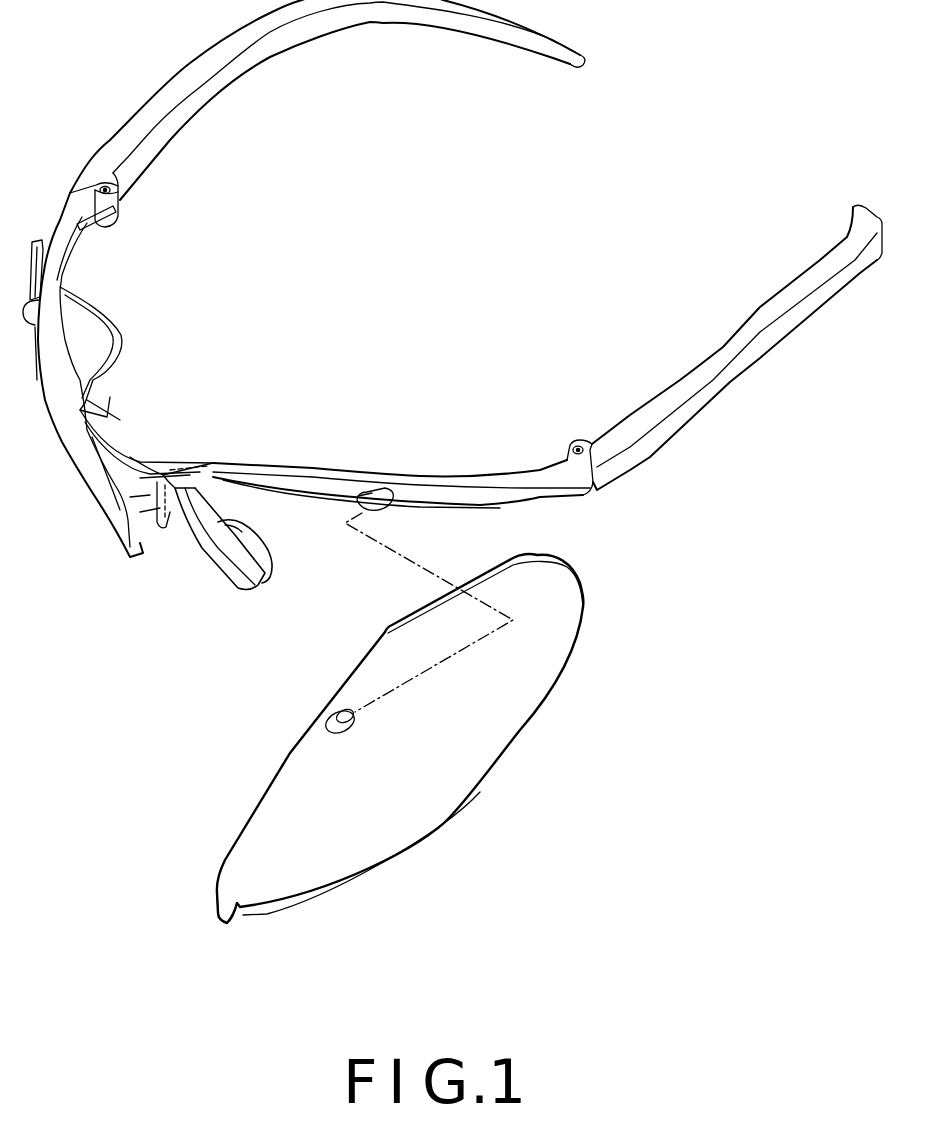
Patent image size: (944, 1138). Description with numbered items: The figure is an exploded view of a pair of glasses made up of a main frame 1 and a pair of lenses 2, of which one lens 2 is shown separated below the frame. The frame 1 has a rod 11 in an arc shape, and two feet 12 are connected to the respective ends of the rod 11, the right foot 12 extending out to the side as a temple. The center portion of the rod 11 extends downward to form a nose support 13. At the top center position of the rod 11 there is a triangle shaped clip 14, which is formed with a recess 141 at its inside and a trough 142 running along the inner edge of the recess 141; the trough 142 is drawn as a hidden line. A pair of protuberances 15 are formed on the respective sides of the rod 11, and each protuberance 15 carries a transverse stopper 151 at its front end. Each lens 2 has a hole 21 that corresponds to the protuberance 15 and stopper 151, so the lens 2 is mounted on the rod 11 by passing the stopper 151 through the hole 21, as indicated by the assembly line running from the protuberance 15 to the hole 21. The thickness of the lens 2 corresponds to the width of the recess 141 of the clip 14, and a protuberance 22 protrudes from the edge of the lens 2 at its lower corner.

The main frame 1 is at (633, 281).
The rod 11 is at (517, 478).
The feet 12 is at (727, 370).
The nose support 13 is at (212, 532).
The triangle shaped clip 14 is at (120, 423).
The recess 141 is at (217, 463).
The trough 142 is at (167, 470).
The protuberance 15 is at (390, 493).
The transverse stopper 151 is at (365, 493).
The lens 2 is at (513, 687).
The hole 21 is at (325, 722).
The protuberance 22 is at (235, 900).